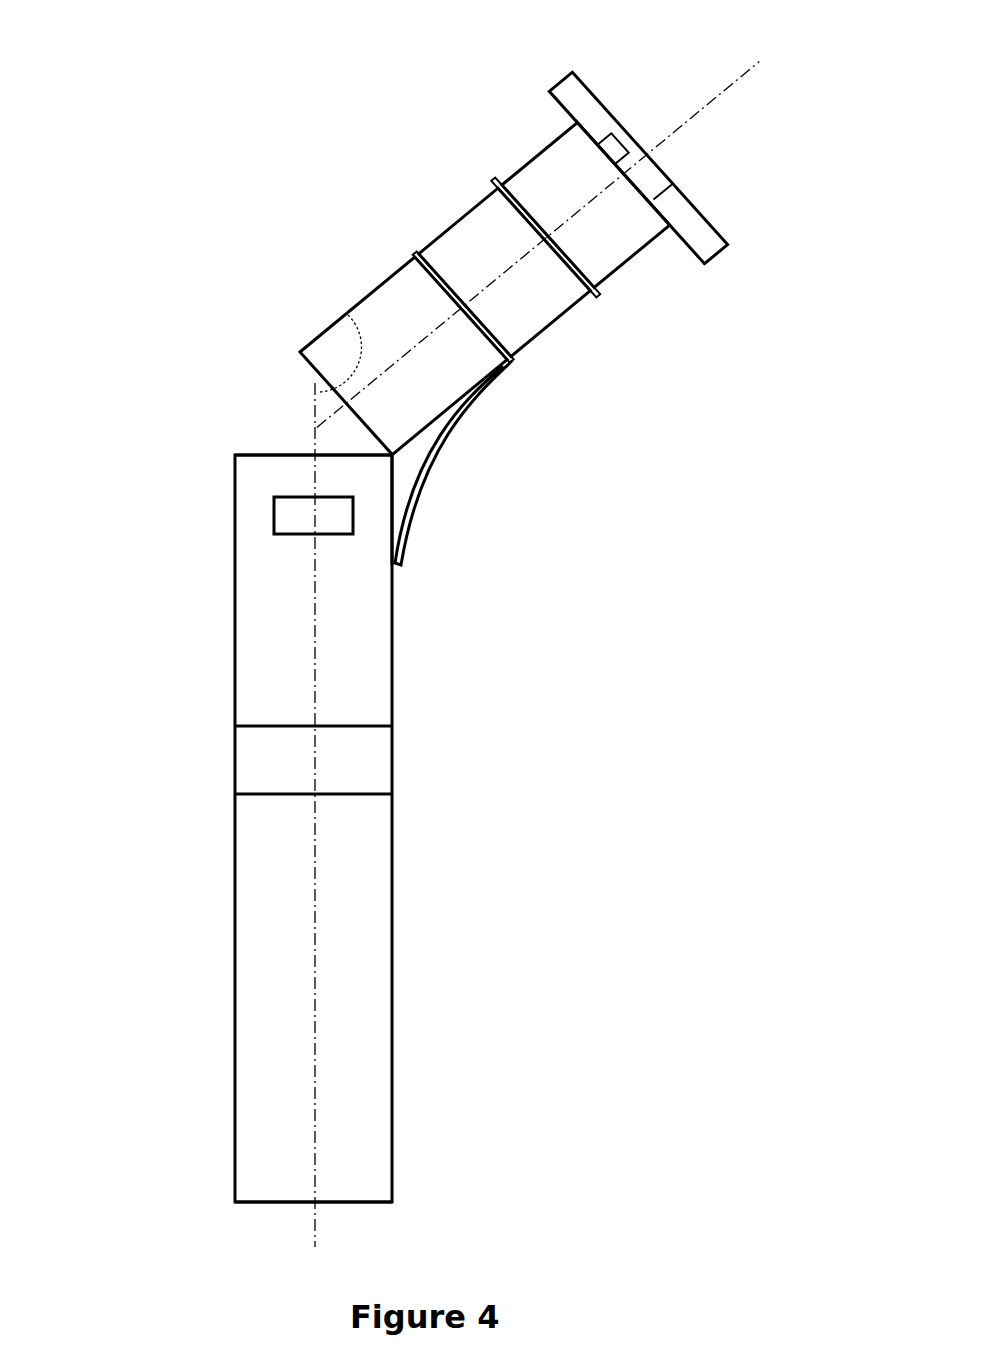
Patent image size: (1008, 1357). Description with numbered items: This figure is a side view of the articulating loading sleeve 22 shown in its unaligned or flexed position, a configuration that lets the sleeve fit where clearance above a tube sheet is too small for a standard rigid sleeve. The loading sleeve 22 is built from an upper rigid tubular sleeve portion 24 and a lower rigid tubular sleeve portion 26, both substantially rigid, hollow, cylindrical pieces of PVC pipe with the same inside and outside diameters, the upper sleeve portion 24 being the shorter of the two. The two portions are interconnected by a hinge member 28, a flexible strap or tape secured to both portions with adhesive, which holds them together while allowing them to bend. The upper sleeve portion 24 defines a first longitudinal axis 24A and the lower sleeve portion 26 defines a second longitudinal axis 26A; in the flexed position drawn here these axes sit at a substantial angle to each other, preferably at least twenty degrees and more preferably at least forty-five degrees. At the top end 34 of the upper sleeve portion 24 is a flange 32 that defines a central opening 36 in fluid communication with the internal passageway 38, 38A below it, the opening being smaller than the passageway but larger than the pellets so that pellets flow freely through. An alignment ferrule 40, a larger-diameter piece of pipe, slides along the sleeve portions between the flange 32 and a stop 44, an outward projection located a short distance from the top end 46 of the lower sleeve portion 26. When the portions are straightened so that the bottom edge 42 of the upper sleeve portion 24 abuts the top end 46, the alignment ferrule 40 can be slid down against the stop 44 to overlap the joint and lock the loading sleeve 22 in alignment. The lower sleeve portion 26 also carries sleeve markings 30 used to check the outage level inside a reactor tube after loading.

The loading sleeve 22 is at (683, 462).
The upper rigid tubular sleeve portion 24 is at (357, 305).
The first longitudinal axis 24A is at (503, 267).
The lower rigid tubular sleeve portion 26 is at (393, 925).
The second longitudinal axis 26A is at (313, 913).
The hinge member 28 is at (447, 443).
The sleeve markings 30 is at (358, 793).
The flange 32 is at (708, 213).
The top end 34 is at (572, 123).
The central opening 36 is at (627, 146).
The internal passageway 38 is at (312, 383).
The internal passageway 38A is at (237, 1183).
The alignment ferrule 40 is at (553, 326).
The bottom edge of upper sleeve portion 42 is at (362, 430).
The stop 44 is at (315, 535).
The top end of lower sleeve portion 46 is at (253, 450).